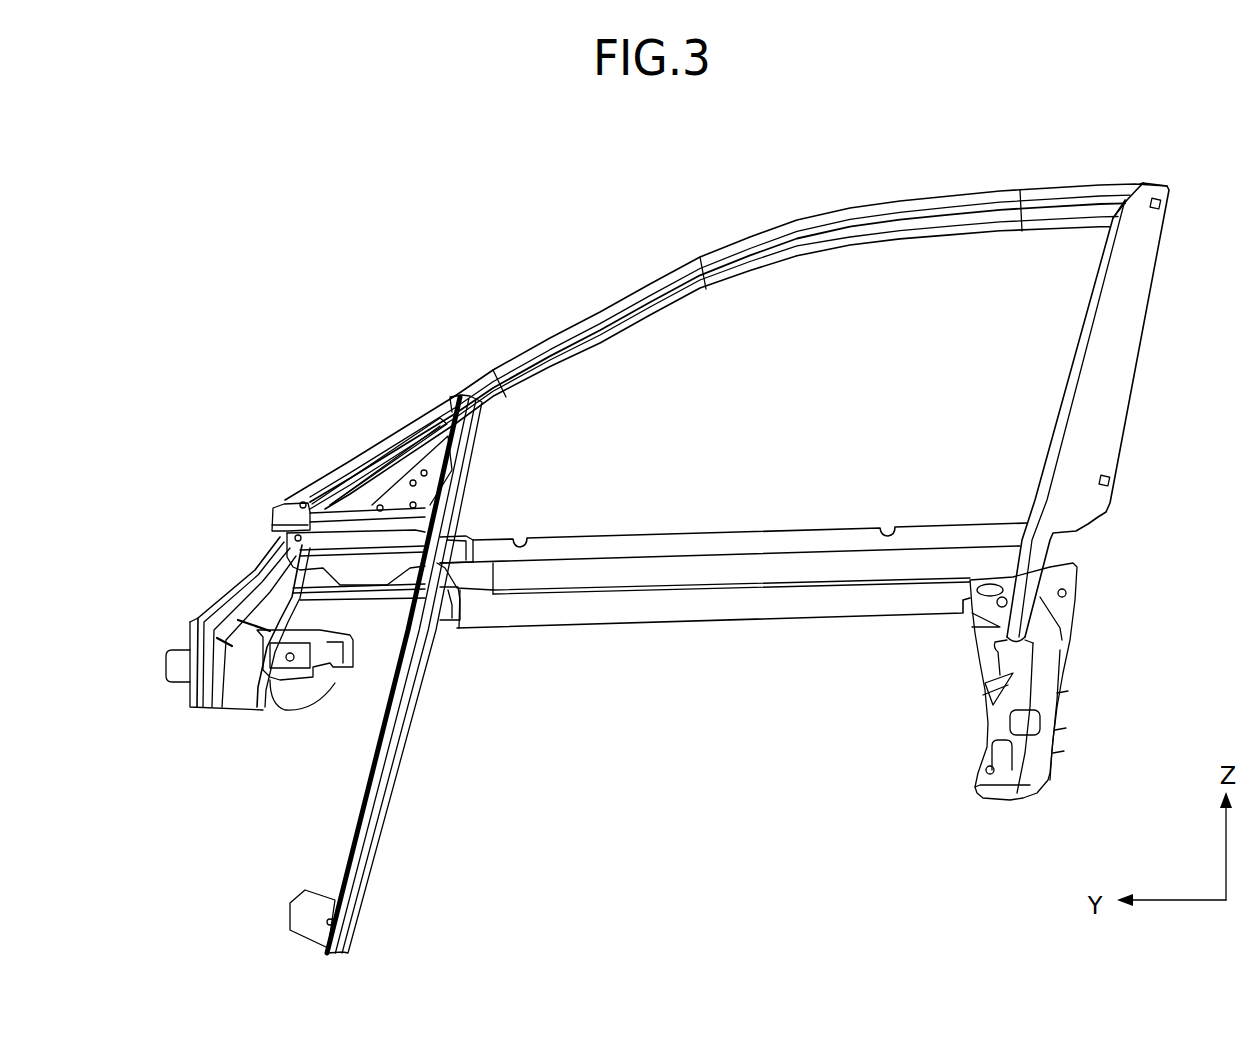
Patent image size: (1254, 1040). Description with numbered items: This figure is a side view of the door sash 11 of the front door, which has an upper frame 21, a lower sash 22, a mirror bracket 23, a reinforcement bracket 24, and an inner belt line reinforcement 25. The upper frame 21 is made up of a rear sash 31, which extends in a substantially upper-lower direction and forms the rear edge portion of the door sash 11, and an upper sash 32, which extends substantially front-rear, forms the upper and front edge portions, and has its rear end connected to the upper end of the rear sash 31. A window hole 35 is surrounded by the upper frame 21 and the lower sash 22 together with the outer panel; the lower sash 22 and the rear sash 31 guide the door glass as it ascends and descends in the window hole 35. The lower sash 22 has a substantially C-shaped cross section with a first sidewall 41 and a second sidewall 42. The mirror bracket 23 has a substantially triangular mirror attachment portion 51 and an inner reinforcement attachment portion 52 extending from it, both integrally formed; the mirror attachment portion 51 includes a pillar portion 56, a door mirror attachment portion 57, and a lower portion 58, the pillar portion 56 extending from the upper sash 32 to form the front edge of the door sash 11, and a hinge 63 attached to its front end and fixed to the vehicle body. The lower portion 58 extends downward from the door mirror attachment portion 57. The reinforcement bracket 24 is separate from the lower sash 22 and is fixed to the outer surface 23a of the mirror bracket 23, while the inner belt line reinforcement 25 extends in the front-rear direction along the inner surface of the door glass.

The door sash 11 is at (494, 146).
The upper frame 21 is at (1097, 100).
The lower sash 22 is at (390, 777).
The mirror bracket 23 is at (400, 428).
The outer surface 23a is at (313, 580).
The reinforcement bracket 24 is at (274, 500).
The inner belt line reinforcement 25 is at (705, 628).
The rear sash 31 is at (1152, 193).
The upper sash 32 is at (1085, 202).
The window hole 35 is at (864, 262).
The first sidewall 41 is at (358, 863).
The second sidewall 42 is at (375, 820).
The mirror attachment portion 51 is at (263, 560).
The inner reinforcement attachment portion 52 is at (447, 623).
The pillar portion 56 is at (355, 483).
The door mirror attachment portion 57 is at (415, 478).
The lower portion 58 is at (323, 627).
The hinge 63 is at (162, 666).